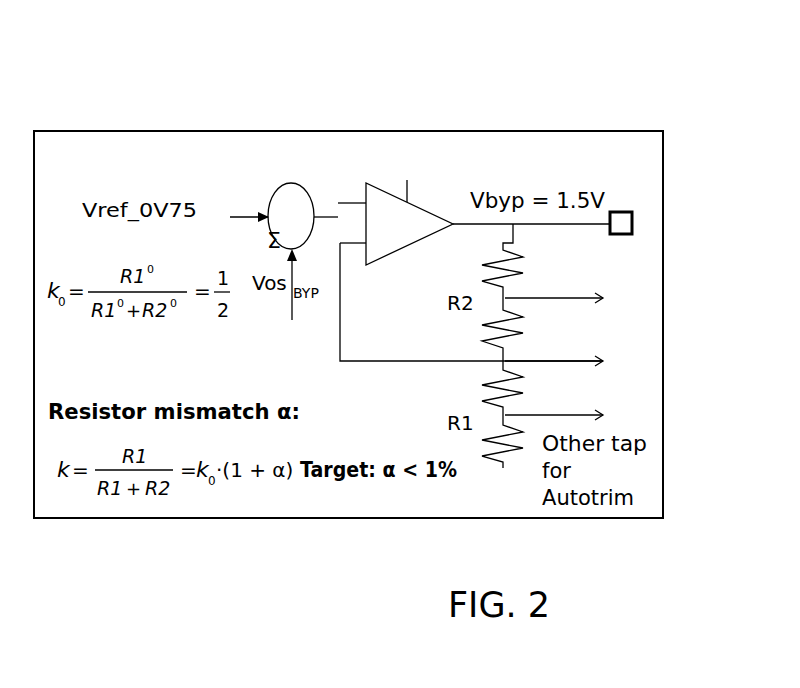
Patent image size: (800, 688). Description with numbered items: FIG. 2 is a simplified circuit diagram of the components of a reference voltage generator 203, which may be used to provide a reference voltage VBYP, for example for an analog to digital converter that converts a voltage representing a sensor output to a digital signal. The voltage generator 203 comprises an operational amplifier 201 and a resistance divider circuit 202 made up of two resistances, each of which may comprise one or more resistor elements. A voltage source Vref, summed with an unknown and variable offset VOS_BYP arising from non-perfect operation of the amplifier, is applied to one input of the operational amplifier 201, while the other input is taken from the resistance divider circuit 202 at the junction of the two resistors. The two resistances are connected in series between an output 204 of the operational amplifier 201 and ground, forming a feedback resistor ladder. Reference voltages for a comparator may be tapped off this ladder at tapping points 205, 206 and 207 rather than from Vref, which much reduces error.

The operational amplifier 201 is at (434, 212).
The resistance divider circuit 202 is at (418, 326).
The voltage generator 203 is at (213, 146).
The output 204 is at (632, 213).
The tapping point 205 is at (603, 298).
The tapping point 206 is at (603, 361).
The tapping point 207 is at (603, 415).